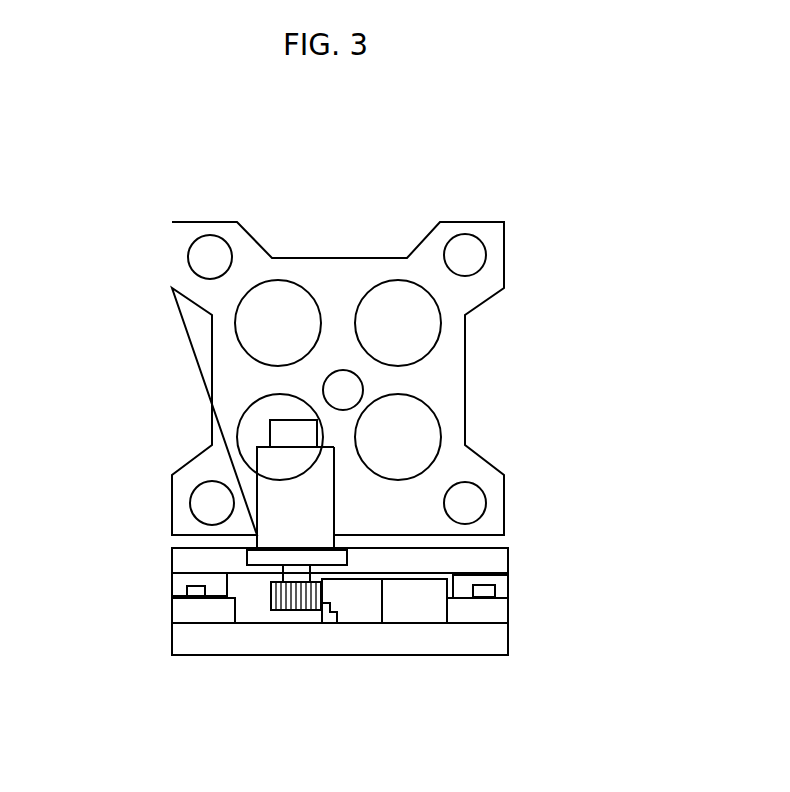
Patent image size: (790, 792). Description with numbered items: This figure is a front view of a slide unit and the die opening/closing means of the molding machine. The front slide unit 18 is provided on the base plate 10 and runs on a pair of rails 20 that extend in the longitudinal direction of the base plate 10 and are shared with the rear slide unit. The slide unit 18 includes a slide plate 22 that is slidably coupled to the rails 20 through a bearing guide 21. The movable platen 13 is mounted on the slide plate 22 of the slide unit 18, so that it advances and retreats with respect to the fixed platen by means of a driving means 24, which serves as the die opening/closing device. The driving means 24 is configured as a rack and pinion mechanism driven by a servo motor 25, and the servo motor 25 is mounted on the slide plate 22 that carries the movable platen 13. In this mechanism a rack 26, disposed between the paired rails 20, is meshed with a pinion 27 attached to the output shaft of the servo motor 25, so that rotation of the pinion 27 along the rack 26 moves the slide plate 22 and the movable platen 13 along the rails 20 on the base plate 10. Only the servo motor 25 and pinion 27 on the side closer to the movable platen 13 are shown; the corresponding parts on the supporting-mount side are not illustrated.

The movable platen 13 is at (473, 222).
The servo motor 25 is at (288, 475).
The driving means 24 is at (335, 482).
The slide plate 22 is at (493, 562).
The front slide unit 18 is at (172, 573).
The bearing guide 21 is at (507, 588).
The rails 20 is at (193, 591).
The pinion 27 is at (300, 611).
The rack 26 is at (332, 614).
The base plate 10 is at (168, 623).